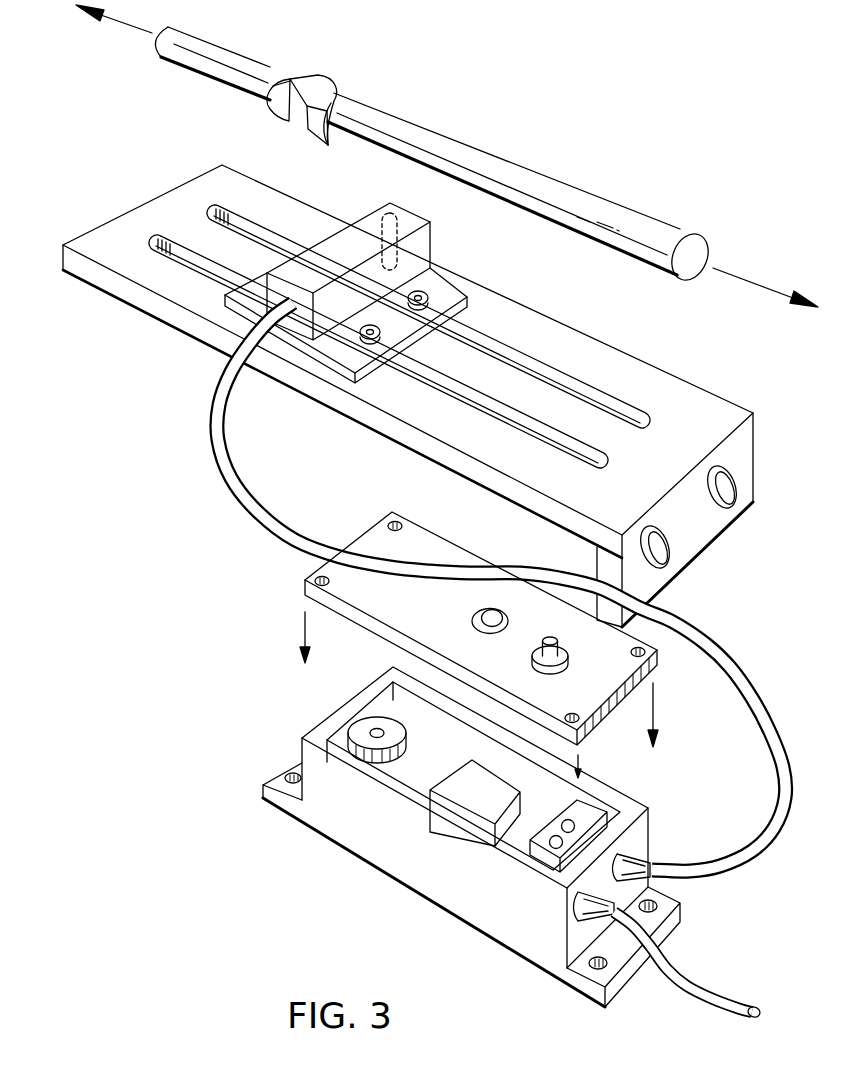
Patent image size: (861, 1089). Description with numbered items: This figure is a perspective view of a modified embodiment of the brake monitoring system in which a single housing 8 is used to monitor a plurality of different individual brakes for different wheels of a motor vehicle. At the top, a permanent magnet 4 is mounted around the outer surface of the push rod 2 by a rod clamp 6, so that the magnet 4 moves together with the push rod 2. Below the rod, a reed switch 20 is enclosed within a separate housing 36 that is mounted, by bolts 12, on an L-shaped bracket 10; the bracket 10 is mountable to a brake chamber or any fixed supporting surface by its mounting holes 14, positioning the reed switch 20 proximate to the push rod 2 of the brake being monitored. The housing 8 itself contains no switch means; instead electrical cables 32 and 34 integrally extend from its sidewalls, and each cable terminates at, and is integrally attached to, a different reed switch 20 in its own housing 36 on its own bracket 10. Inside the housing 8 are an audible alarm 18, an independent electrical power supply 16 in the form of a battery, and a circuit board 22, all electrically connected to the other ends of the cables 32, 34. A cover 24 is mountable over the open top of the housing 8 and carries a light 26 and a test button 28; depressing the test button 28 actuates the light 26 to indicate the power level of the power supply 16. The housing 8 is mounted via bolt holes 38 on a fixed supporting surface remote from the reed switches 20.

The push rod 2 is at (250, 54).
The permanent magnet 4 is at (268, 114).
The rod clamp 6 is at (320, 79).
The housing 8 is at (398, 886).
The L shaped bracket 10 is at (405, 447).
The bolts 12 is at (369, 327).
The mounting holes 14 is at (673, 538).
The independent electrical power supply 16 is at (566, 805).
The audible alarm 18 is at (418, 710).
The reed switches 20 is at (383, 226).
The circuit board 22 is at (467, 757).
The cover 24 is at (452, 543).
The light 26 is at (476, 626).
The test button 28 is at (536, 660).
The electrical cable 32 is at (214, 397).
The electrical cable 34 is at (695, 965).
The reed switch housing 36 is at (390, 203).
The bolt holes 38 is at (286, 772).